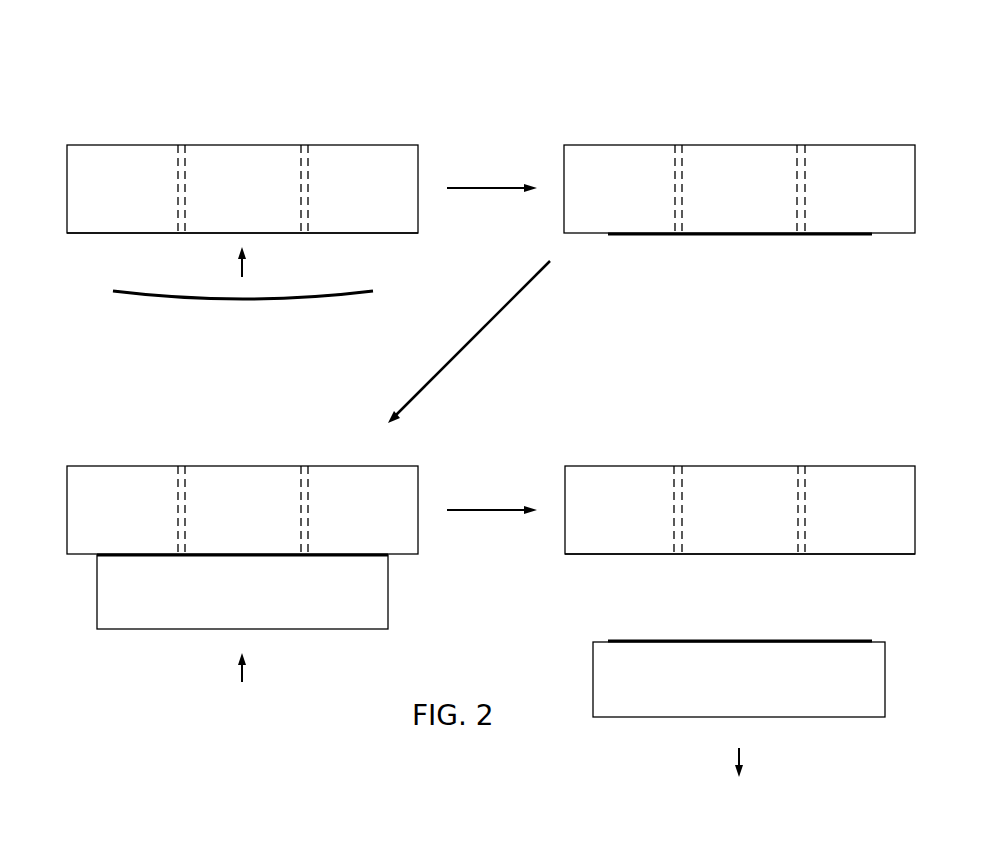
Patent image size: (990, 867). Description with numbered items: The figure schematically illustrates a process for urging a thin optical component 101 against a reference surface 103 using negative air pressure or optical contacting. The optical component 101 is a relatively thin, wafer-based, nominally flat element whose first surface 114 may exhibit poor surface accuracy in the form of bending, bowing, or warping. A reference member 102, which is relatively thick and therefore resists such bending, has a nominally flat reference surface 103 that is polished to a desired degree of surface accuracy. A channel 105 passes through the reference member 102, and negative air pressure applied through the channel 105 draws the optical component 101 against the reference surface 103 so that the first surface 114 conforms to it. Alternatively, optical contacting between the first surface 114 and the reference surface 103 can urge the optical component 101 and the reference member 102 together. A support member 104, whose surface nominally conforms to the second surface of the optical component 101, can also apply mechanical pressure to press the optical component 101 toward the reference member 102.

The optical component 101 is at (227, 300).
The reference member 102 is at (224, 200).
The reference surface 103 is at (138, 243).
The support member 104 is at (224, 608).
The channel 105 is at (307, 180).
The first surface 114 is at (318, 283).